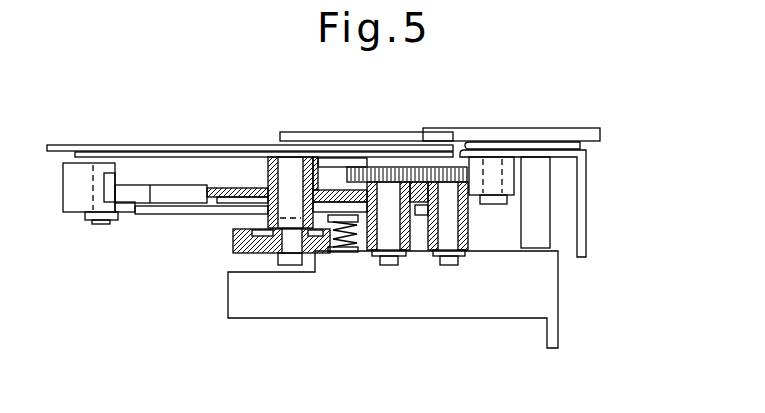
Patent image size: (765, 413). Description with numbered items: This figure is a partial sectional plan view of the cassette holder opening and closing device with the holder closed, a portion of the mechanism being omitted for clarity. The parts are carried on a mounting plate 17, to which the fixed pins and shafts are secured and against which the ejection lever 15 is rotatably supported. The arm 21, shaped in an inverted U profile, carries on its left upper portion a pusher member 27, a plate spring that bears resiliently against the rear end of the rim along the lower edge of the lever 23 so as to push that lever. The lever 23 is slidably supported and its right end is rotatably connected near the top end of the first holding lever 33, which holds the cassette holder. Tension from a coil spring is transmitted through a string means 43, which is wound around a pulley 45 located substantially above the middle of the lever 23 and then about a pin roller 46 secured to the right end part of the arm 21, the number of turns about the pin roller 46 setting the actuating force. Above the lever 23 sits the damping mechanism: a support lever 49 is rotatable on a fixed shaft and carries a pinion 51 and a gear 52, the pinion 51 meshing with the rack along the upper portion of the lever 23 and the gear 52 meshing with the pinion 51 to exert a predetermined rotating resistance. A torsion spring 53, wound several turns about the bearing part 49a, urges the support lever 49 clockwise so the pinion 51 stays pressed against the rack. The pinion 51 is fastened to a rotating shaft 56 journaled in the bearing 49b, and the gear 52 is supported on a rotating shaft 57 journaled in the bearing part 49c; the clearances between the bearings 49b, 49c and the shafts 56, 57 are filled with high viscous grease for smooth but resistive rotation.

The ejection lever 15 is at (550, 301).
The mounting plate 17 is at (582, 217).
The arm 21 is at (147, 213).
The lever 23 is at (128, 168).
The pusher member 27 is at (98, 182).
The first holding lever 33 is at (532, 132).
The string means 43 is at (362, 253).
The pulley 45 is at (238, 253).
The pin roller 46 is at (343, 253).
The support lever 49 is at (258, 148).
The bearing part 49a is at (262, 180).
The bearing 49b is at (413, 240).
The bearing part 49c is at (423, 240).
The pinion 51 is at (407, 170).
The gear 52 is at (452, 162).
The torsion spring 53 is at (265, 158).
The rotating shaft 56 is at (390, 242).
The rotating shaft 57 is at (460, 255).